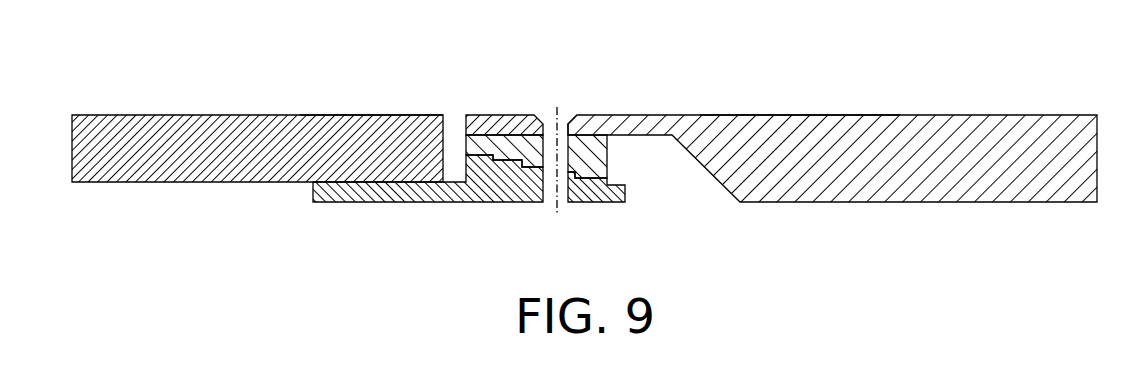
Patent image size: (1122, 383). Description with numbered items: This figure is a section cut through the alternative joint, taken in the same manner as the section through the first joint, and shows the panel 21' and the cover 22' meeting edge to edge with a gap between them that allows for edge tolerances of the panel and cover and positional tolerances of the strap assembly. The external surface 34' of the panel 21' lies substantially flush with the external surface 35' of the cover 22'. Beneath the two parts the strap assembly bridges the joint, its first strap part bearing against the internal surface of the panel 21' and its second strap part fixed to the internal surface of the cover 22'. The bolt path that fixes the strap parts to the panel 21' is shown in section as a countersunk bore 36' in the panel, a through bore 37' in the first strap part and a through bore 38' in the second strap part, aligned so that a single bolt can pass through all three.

The panel 21' is at (832, 134).
The cover 22' is at (257, 124).
The external surface of panel 34' is at (800, 81).
The external surface of cover 35' is at (371, 81).
The countersunk bore 36' is at (551, 139).
The through bore 37' is at (587, 122).
The through bore 38' is at (469, 210).